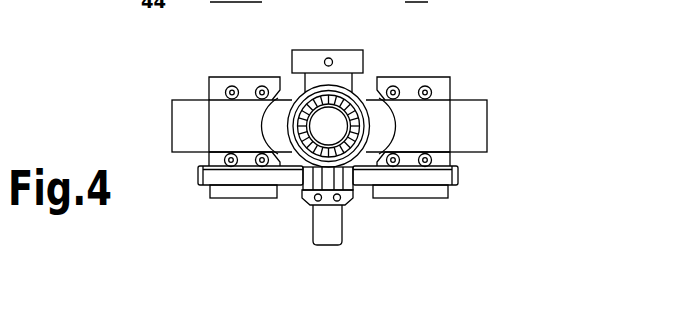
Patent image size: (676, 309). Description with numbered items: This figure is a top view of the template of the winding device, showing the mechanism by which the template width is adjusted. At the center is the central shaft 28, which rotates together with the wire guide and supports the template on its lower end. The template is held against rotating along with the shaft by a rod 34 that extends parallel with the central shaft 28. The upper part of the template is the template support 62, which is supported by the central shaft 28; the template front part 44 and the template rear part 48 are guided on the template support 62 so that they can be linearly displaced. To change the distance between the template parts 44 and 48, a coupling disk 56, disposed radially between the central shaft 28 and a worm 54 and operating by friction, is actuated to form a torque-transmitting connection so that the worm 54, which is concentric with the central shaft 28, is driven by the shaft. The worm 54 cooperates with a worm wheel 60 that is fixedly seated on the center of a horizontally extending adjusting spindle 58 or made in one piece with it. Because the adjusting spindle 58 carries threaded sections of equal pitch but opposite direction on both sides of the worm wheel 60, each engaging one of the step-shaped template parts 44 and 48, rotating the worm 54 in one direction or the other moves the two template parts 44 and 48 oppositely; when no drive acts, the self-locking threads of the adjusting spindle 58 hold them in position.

The central shaft 28 is at (322, 128).
The rod 34 is at (329, 57).
The template front part 44 is at (247, 78).
The template rear part 48 is at (441, 90).
The worm 54 is at (298, 93).
The coupling disk 56 is at (354, 99).
The adjusting spindle 58 is at (458, 178).
The worm wheel 60 is at (327, 180).
The template support 62 is at (473, 110).